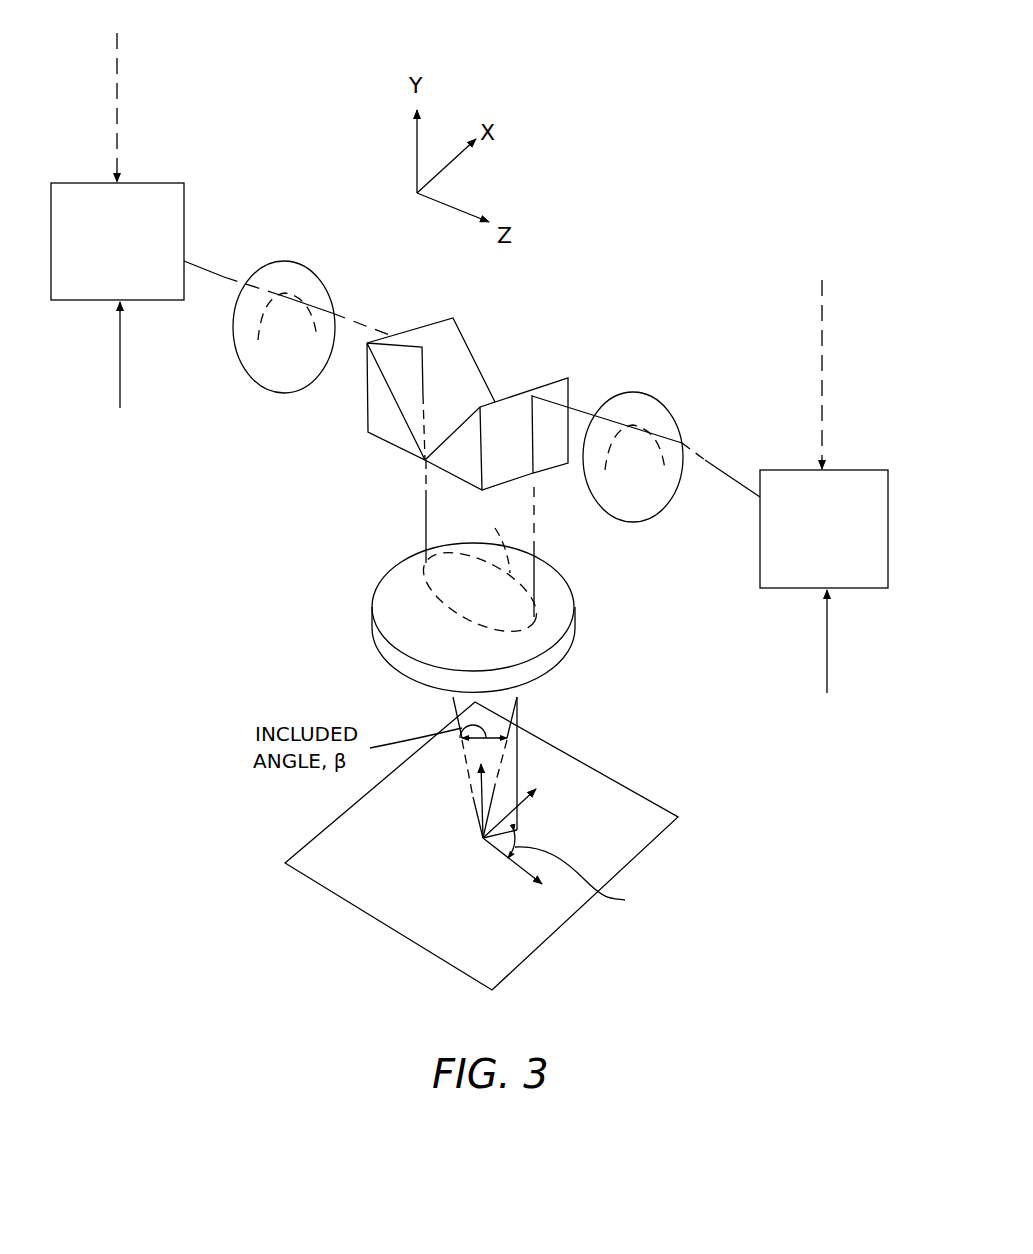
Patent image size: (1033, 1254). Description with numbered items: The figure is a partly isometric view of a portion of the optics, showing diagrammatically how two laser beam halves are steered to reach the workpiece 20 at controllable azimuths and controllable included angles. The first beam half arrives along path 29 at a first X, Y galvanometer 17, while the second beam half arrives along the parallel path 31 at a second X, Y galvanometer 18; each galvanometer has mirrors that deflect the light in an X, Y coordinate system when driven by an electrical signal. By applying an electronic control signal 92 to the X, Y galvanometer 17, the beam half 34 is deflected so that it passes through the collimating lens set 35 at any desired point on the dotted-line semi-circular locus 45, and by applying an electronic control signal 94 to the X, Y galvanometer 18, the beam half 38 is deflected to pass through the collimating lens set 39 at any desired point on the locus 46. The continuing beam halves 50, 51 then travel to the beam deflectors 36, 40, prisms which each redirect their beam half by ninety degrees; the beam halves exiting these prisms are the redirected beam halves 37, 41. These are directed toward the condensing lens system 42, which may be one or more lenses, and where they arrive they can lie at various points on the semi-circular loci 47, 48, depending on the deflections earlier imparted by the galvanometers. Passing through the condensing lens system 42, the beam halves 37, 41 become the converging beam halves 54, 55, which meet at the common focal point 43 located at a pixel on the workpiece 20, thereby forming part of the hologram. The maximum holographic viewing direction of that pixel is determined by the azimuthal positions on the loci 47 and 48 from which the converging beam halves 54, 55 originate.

The path 29 is at (117, 100).
The X, Y galvanometer 17 is at (184, 205).
The electronic control signal 92 is at (119, 362).
The beam half 34 is at (217, 270).
The collimating lens set 35 is at (313, 270).
The semi-circle 45 is at (258, 322).
The beam half 50 is at (350, 321).
The beam deflector 36 is at (462, 336).
The beam deflector 40 is at (563, 378).
The beam half 51 is at (577, 410).
The collimating lens set 39 is at (660, 403).
The semi-circle 46 is at (682, 441).
The beam half 38 is at (713, 470).
The path 31 is at (823, 357).
The X, Y galvanometer 18 is at (858, 468).
The electronic control signal 94 is at (828, 652).
The beam half 37 is at (423, 503).
The semi-circle 48 is at (488, 538).
The beam half 41 is at (535, 494).
The condensing lens system 42 is at (574, 595).
The semi-circle 47 is at (447, 627).
The beam half 54 is at (453, 713).
The beam half 55 is at (514, 710).
The workpiece 20 is at (632, 785).
The focal point 43 is at (483, 838).